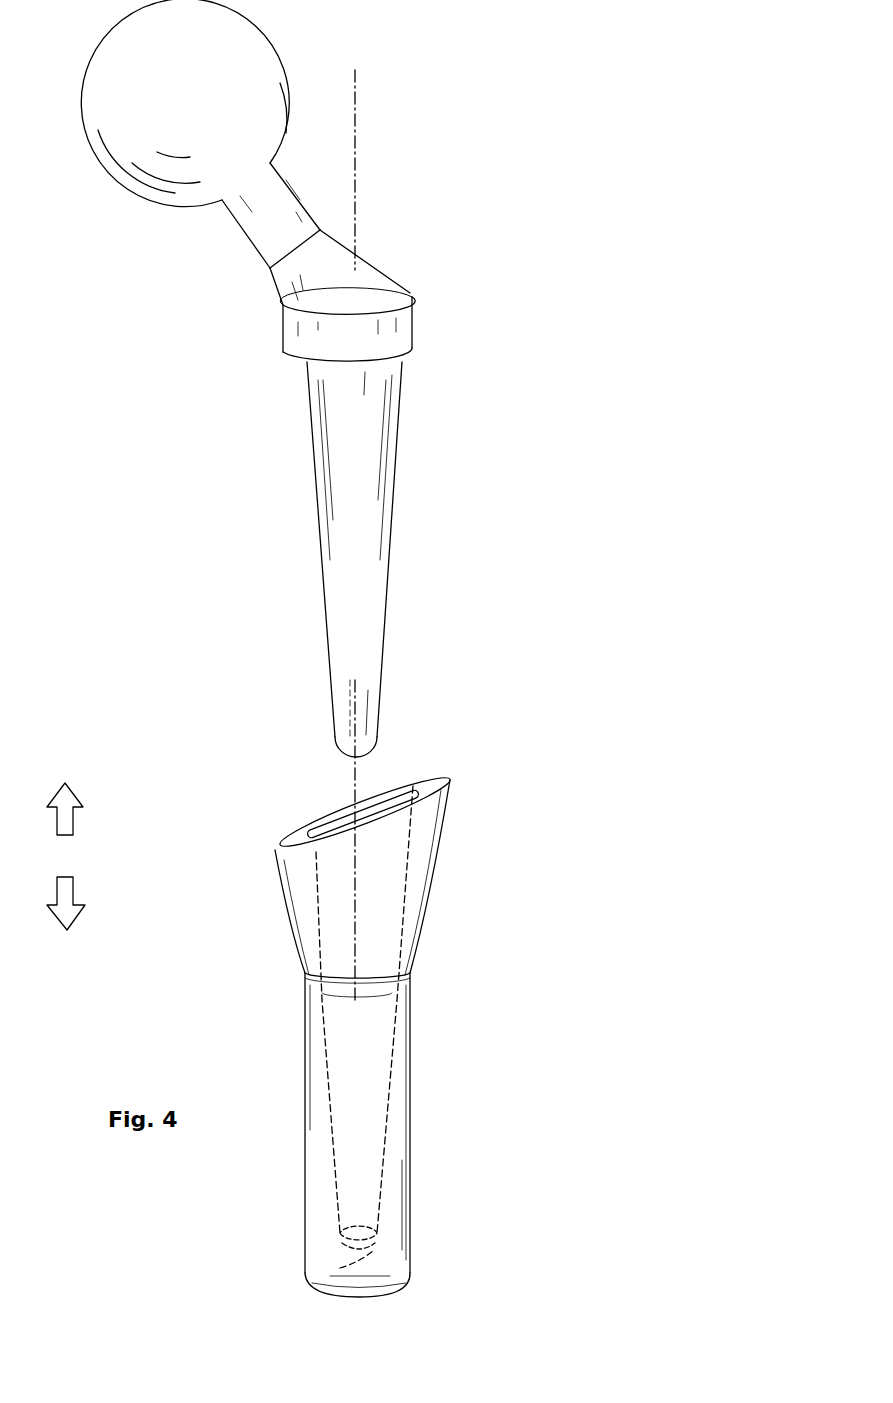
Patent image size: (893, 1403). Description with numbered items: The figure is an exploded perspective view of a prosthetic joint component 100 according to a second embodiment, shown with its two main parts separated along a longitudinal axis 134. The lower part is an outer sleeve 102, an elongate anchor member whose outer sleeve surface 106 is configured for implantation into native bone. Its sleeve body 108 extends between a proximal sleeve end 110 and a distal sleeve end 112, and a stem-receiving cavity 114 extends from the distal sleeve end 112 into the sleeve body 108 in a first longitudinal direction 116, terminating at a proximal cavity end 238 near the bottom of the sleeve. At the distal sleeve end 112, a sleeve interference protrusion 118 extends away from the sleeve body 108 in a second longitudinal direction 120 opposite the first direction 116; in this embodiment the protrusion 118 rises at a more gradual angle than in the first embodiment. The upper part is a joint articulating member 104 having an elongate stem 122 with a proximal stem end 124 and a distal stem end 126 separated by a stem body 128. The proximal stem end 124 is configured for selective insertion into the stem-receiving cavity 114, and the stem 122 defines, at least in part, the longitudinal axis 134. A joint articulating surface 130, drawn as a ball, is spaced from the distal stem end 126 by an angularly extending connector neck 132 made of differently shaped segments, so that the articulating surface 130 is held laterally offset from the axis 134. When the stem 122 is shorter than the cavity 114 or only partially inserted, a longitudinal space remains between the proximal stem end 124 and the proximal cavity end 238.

The prosthetic joint component 100 is at (482, 240).
The outer sleeve 102 is at (442, 1132).
The joint articulating member 104 is at (485, 435).
The outer sleeve surface 106 is at (387, 1208).
The sleeve body 108 is at (399, 1088).
The proximal sleeve end 110 is at (422, 1271).
The distal sleeve end 112 is at (460, 897).
The stem-receiving cavity 114 is at (400, 888).
The first longitudinal direction 116 is at (74, 888).
The sleeve interference protrusion 118 is at (422, 828).
The second longitudinal direction 120 is at (74, 820).
The stem 122 is at (420, 576).
The proximal stem end 124 is at (392, 752).
The distal stem end 126 is at (412, 364).
The stem body 128 is at (360, 520).
The joint articulating surface 130 is at (208, 92).
The connector neck 132 is at (240, 267).
The longitudinal axis 134 is at (356, 144).
The proximal cavity end 238 is at (340, 1268).